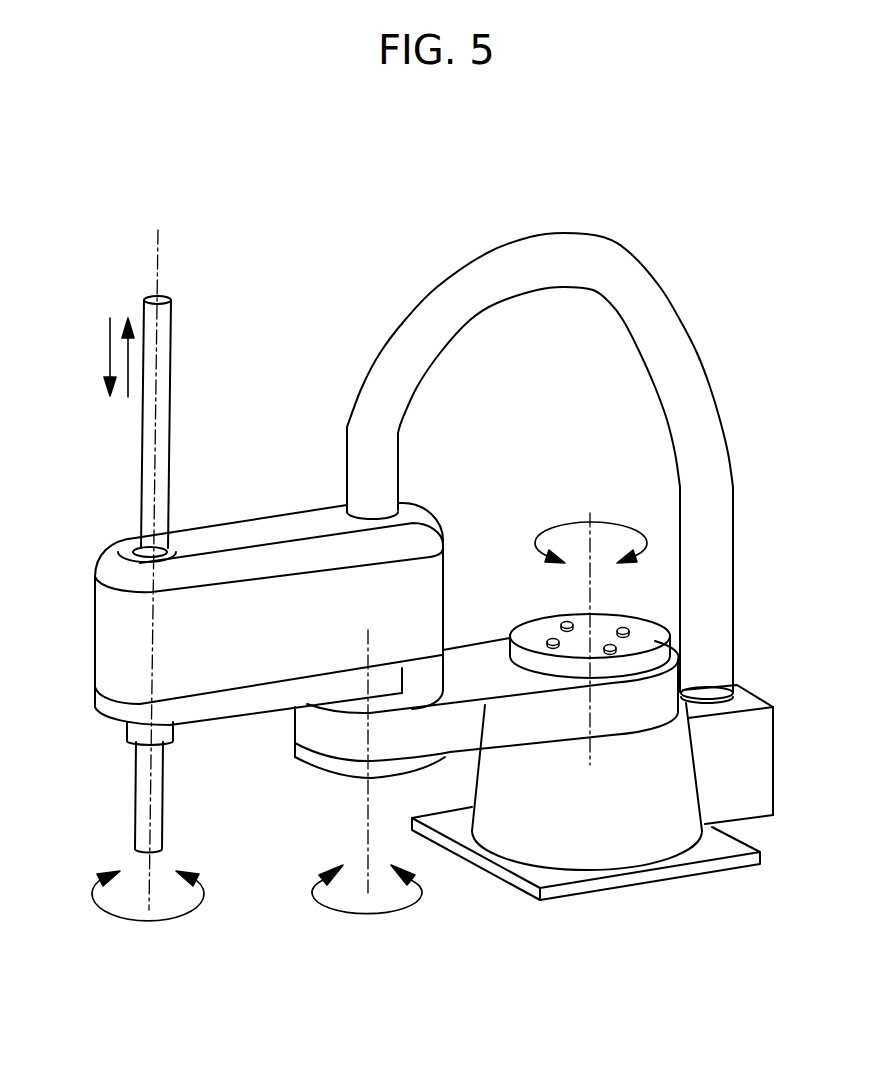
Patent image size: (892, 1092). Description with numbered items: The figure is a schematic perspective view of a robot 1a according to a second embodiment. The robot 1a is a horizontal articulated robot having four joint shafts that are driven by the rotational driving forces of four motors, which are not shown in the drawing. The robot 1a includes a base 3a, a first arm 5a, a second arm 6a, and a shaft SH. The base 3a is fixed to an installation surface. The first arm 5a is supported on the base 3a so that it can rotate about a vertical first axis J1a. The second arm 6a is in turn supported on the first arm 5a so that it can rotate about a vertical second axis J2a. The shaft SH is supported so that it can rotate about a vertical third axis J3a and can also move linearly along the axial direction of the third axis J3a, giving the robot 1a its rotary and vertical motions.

The robot 1a is at (667, 181).
The base 3a is at (528, 840).
The first arm 5a is at (477, 640).
The second arm 6a is at (258, 515).
The shaft SH is at (170, 326).
The first axis J1a is at (591, 623).
The second axis J2a is at (367, 791).
The third axis J3a is at (148, 593).